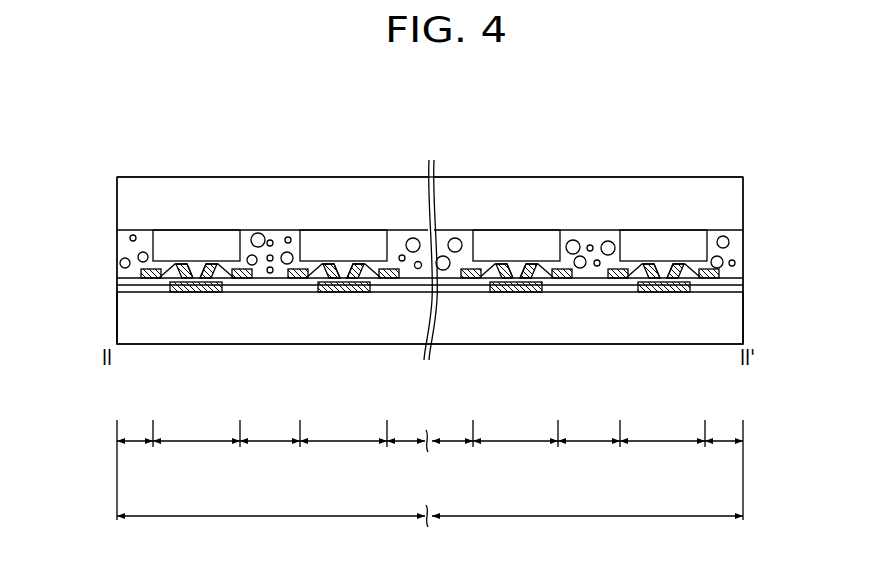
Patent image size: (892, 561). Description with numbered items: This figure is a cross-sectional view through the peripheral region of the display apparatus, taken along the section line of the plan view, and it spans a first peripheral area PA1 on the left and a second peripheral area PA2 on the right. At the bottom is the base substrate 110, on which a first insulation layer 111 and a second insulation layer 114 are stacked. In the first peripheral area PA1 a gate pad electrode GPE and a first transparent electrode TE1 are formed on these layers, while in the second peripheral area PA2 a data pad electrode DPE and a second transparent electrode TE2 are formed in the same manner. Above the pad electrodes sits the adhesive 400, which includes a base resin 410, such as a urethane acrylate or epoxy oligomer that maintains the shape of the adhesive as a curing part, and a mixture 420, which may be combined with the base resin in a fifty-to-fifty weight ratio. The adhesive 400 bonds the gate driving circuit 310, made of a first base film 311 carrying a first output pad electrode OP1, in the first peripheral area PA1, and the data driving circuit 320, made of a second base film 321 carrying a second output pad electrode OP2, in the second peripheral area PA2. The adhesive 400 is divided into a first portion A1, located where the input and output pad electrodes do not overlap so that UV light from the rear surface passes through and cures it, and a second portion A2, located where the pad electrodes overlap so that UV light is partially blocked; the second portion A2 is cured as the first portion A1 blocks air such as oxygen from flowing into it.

The adhesive 400 is at (248, 118).
The base resin 410 is at (257, 234).
The mixture 420 is at (133, 236).
The gate driving circuit 310 is at (57, 186).
The first base film 311 is at (117, 194).
The first output pad electrode OP1 is at (163, 243).
The data driving circuit 320 is at (808, 189).
The second base film 321 is at (743, 195).
The second output pad electrode OP2 is at (697, 243).
The second insulation layer 114 is at (118, 280).
The first insulation layer 111 is at (117, 292).
The base substrate 110 is at (120, 333).
The gate pad electrode GPE is at (187, 293).
The first transparent electrode TE1 is at (209, 280).
The data pad electrode DPE is at (506, 293).
The second transparent electrode TE2 is at (561, 280).
The first portion A1 is at (430, 458).
The second portion A2 is at (429, 454).
The first peripheral area PA1 is at (271, 528).
The second peripheral area PA2 is at (587, 528).